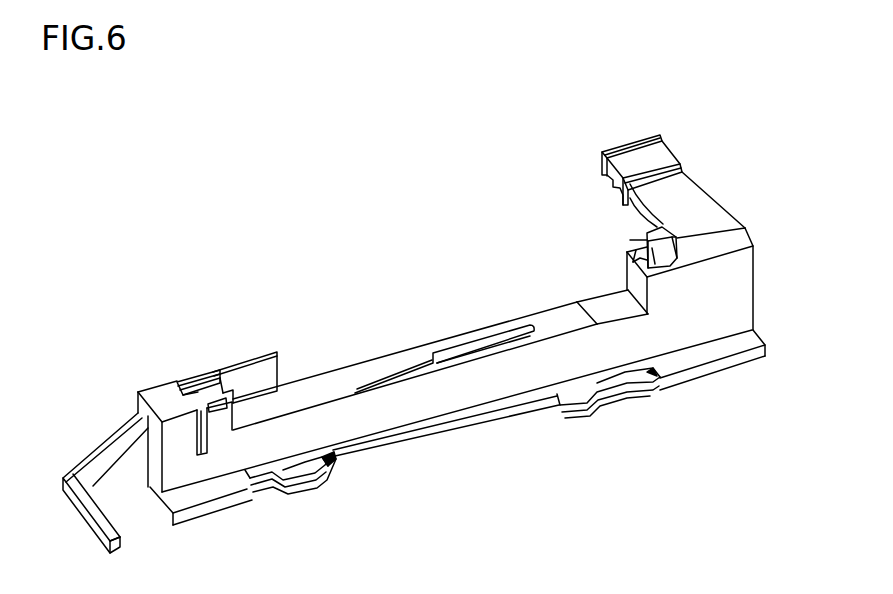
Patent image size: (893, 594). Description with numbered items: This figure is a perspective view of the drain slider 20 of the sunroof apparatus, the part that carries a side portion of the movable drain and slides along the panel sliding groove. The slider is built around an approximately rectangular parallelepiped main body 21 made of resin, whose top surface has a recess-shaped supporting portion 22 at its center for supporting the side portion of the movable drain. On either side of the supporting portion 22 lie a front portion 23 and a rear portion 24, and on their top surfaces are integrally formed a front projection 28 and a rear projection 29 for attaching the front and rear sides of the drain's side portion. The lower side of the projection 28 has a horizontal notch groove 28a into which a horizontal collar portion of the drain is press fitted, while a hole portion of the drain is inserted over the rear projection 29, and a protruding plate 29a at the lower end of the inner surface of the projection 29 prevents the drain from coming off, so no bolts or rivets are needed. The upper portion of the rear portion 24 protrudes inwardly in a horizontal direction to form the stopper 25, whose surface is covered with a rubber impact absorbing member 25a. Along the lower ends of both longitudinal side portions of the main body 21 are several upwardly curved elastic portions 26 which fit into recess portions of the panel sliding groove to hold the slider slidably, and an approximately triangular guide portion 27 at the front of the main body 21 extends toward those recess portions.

The drain slider 20 is at (456, 304).
The main body 21 is at (455, 402).
The supporting portion 22 is at (323, 390).
The front portion 23 is at (158, 400).
The rear portion 24 is at (713, 285).
The stopper 25 is at (623, 140).
The impact absorbing member 25a is at (658, 153).
The elastic portions 26 is at (285, 487).
The guide portion 27 is at (108, 515).
The projection 28 is at (195, 374).
The horizontal notch groove 28a is at (233, 372).
The rear projection 29 is at (645, 240).
The protruding plate 29a is at (628, 252).